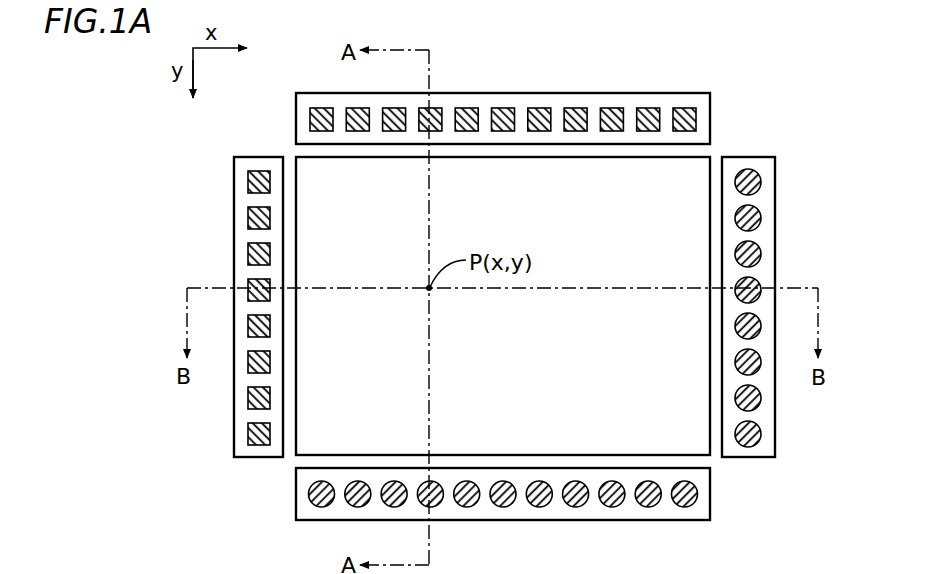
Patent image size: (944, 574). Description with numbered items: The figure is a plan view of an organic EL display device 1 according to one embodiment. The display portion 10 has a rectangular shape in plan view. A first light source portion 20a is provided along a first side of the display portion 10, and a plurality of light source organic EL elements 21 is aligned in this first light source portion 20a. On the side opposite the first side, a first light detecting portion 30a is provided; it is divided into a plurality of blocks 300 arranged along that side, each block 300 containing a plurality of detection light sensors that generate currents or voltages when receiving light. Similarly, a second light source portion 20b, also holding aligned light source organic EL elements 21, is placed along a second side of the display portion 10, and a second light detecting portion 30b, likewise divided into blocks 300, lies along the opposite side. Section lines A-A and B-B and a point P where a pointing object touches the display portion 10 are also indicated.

The display device 1 is at (743, 74).
The display portion 10 is at (694, 176).
The first light source portion 20a is at (498, 93).
The second light source portion 20b is at (234, 165).
The light source organic EL element 21 is at (611, 112).
The first light detecting portion 30a is at (628, 521).
The second light detecting portion 30b is at (775, 160).
The block 300 is at (756, 252).